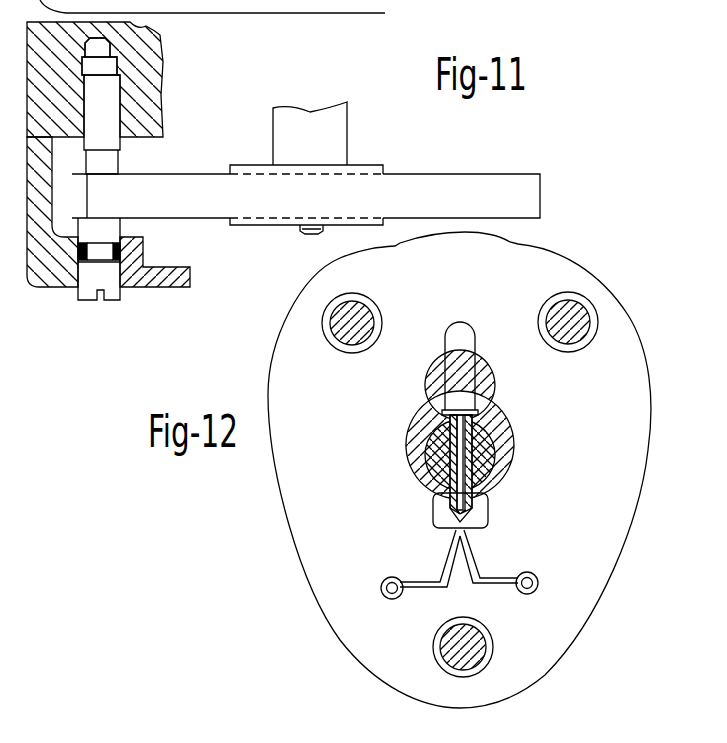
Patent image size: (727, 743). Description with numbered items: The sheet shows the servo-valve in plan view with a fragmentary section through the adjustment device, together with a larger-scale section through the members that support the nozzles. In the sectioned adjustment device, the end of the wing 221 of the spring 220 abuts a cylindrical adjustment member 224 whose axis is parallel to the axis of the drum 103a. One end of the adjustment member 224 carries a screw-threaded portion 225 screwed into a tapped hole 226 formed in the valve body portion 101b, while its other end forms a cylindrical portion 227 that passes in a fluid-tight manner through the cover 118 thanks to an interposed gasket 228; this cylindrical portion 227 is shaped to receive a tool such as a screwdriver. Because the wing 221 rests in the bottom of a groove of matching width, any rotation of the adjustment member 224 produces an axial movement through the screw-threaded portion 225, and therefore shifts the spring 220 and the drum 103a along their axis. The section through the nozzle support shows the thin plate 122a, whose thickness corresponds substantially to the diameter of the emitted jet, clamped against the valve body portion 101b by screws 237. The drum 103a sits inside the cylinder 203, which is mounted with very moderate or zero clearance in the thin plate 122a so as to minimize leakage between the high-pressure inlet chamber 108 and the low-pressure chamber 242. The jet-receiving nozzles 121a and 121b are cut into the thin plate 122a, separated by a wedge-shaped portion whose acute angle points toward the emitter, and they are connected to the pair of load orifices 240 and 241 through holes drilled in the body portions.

In FIG. 11, the valve body portion 101b is at (148, 118).
In FIG. 11, the tapped hole 226 is at (118, 62).
In FIG. 11, the screw-threaded portion 225 is at (120, 97).
In FIG. 11, the cylindrical adjustment member 224 is at (118, 165).
In FIG. 11, the wing of spring 221 is at (140, 207).
In FIG. 11, the spring 220 is at (289, 202).
In FIG. 11, the drum 103a is at (347, 130).
In FIG. 12, the drum 103a is at (478, 462).
In FIG. 11, the gasket 228 is at (123, 252).
In FIG. 11, the cylindrical portion 227 is at (90, 280).
In FIG. 11, the cover 118 is at (143, 278).
In FIG. 12, the thin plate 122a is at (588, 573).
In FIG. 12, the screws 237 is at (346, 330).
In FIG. 12, the cylinder 203 is at (505, 432).
In FIG. 12, the diametral orifice 108 is at (465, 400).
In FIG. 12, the chamber 242 is at (488, 512).
In FIG. 12, the jet-receiving nozzle 121a is at (447, 578).
In FIG. 12, the jet-receiving nozzle 121b is at (475, 565).
In FIG. 12, the load orifice 241 is at (390, 603).
In FIG. 12, the load orifice 240 is at (530, 598).